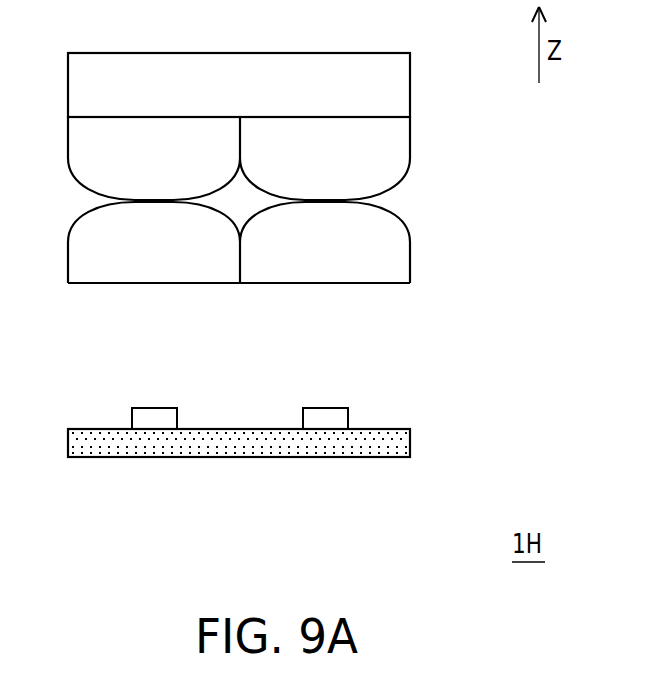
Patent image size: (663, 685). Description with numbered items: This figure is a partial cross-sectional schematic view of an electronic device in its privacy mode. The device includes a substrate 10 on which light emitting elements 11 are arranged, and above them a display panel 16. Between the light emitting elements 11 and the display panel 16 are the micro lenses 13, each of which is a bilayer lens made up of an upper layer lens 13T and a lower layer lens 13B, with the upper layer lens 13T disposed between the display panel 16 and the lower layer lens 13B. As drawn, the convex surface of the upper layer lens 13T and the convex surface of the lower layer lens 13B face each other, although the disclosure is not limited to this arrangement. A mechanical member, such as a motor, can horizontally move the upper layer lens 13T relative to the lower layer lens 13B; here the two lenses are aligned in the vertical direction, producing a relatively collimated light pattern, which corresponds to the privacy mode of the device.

The display panel 16 is at (390, 87).
The micro lens 13 is at (302, 200).
The upper layer lens 13T is at (390, 147).
The lower layer lens 13B is at (274, 242).
The light emitting element 11 is at (328, 420).
The substrate 10 is at (330, 446).